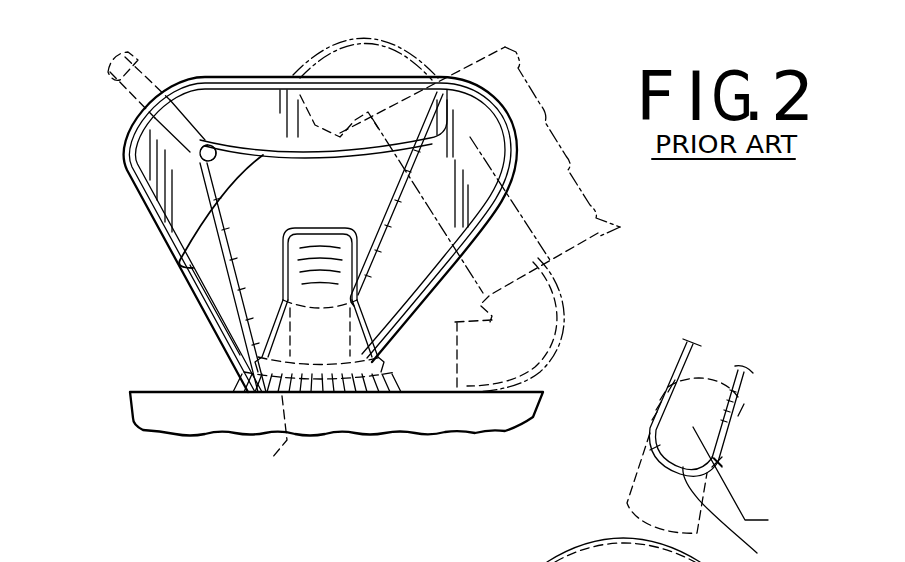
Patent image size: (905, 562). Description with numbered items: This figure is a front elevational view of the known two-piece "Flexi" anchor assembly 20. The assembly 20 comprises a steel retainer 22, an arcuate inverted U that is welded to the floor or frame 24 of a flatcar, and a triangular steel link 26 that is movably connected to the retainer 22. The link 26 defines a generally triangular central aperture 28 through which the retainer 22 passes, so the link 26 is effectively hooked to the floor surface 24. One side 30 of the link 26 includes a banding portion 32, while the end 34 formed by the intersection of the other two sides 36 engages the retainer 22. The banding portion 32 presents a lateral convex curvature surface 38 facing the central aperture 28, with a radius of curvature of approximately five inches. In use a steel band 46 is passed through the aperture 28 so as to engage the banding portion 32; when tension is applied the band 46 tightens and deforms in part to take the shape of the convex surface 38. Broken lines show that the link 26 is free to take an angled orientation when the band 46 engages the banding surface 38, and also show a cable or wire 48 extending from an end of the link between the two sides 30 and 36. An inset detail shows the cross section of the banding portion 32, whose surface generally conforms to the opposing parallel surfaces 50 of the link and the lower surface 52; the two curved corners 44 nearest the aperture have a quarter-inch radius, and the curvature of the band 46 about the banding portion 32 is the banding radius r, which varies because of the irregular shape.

The anchor assembly 20 is at (110, 153).
The retainer 22 is at (312, 232).
The floor or frame 24 is at (468, 421).
The link 26 is at (232, 350).
The central aperture 28 is at (260, 209).
The side of the link 30 is at (205, 77).
The banding portion 32 is at (247, 103).
The retainer-engaging end 34 is at (260, 439).
The other two sides 36 is at (202, 300).
The lateral convex curvature surface 38 is at (260, 209).
The corners 44 is at (653, 448).
The steel band 46 is at (592, 238).
The cable or wire 48 is at (123, 80).
The parallel surfaces 50 is at (670, 393).
The lower surface 52 is at (671, 514).
The banding radius r is at (743, 500).